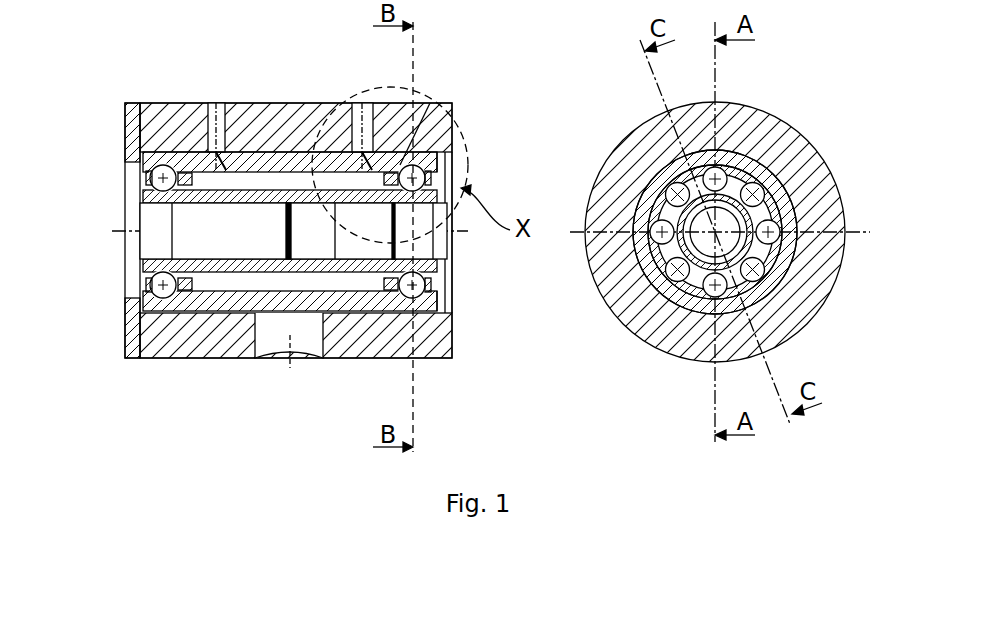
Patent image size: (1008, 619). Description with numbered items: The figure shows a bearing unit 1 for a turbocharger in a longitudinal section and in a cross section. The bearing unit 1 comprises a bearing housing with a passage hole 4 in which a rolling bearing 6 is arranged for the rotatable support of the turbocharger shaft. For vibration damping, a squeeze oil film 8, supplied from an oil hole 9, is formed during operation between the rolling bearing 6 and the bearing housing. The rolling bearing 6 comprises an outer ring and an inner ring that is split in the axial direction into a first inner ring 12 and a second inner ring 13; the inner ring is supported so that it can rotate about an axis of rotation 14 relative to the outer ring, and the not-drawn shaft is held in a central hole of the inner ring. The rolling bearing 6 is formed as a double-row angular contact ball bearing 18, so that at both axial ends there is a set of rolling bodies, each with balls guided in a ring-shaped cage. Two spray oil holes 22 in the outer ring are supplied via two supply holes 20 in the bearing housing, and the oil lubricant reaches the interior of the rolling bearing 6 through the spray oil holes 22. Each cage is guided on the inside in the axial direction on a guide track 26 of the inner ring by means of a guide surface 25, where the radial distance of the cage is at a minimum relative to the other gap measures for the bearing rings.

The bearing unit 1 is at (194, 68).
The passage hole 4 is at (132, 257).
The rolling bearing 6 is at (294, 135).
The squeeze oil film 8 is at (357, 340).
The oil hole 9 is at (267, 353).
The first inner ring 12 is at (212, 340).
The second inner ring 13 is at (290, 352).
The axis of rotation 14 is at (455, 230).
The double-row angular contact ball bearing 18 is at (455, 177).
The supply holes 20 is at (214, 148).
The spray oil holes 22 is at (430, 103).
The guide surface 25 is at (132, 248).
The guide track 26 is at (109, 235).